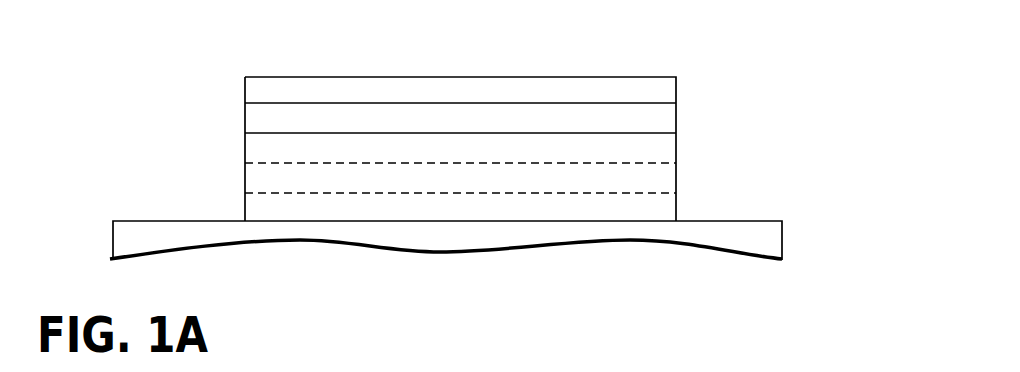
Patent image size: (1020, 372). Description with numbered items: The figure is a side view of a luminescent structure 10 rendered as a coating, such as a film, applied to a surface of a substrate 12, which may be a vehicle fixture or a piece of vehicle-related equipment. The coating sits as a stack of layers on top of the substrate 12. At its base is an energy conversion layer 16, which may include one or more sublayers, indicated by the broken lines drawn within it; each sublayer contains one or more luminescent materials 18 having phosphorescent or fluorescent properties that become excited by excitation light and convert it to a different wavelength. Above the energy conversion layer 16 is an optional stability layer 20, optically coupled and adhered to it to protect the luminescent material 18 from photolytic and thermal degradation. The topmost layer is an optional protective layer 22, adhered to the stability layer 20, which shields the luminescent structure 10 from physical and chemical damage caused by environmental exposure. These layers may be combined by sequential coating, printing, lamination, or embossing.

The luminescent structure 10 is at (446, 134).
The substrate 12 is at (723, 220).
The energy conversion layer 16 is at (450, 151).
The luminescent material 18 is at (627, 178).
The stability layer 20 is at (245, 118).
The protective layer 22 is at (340, 77).